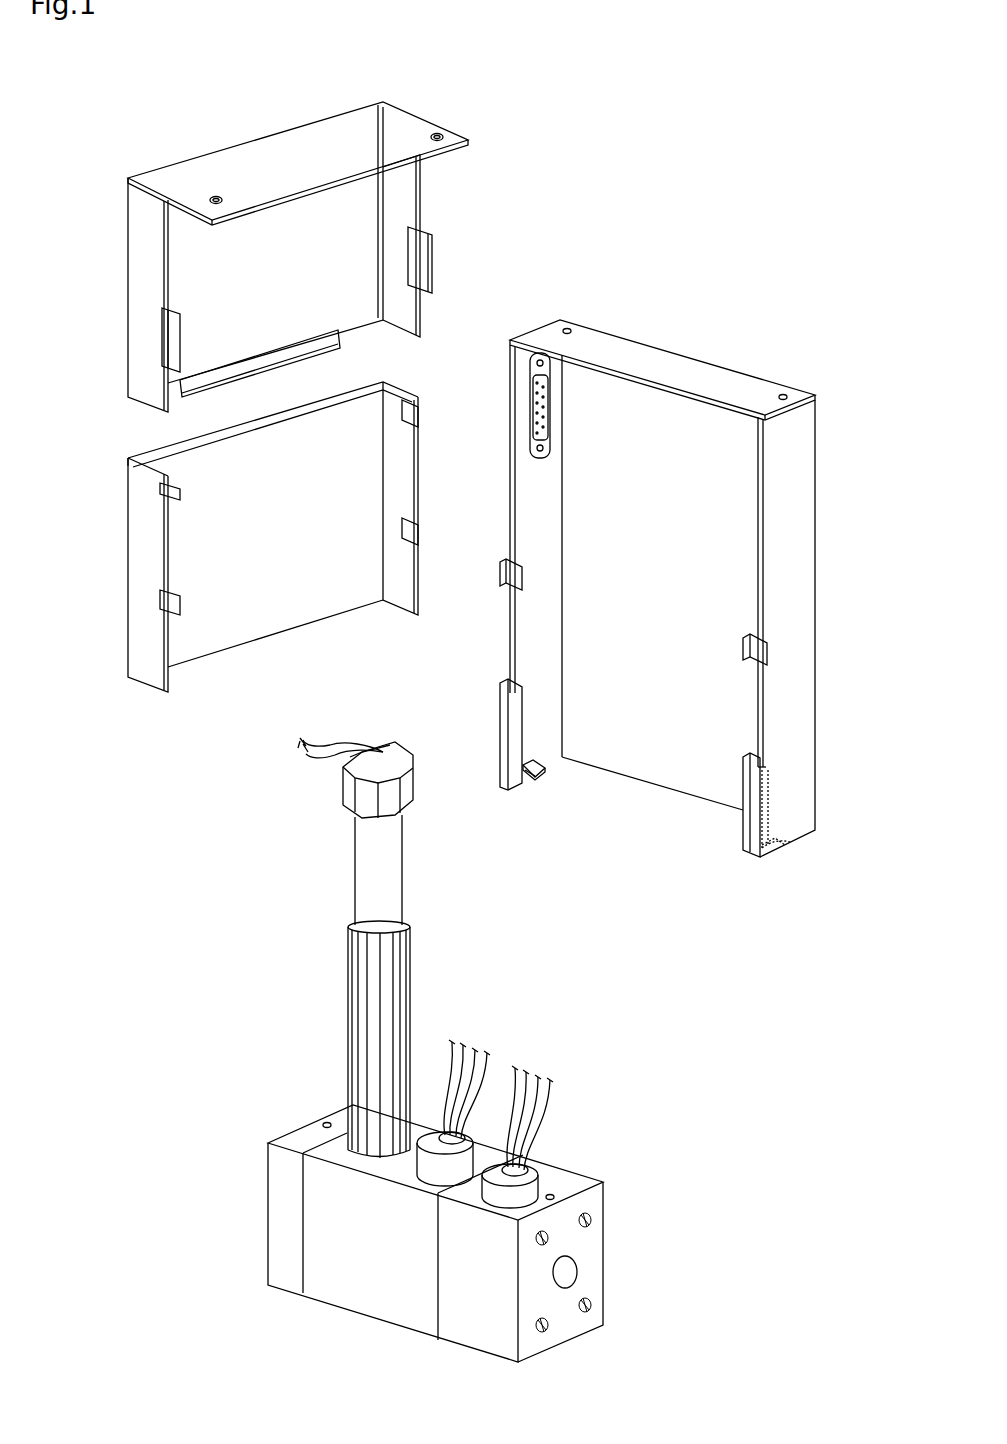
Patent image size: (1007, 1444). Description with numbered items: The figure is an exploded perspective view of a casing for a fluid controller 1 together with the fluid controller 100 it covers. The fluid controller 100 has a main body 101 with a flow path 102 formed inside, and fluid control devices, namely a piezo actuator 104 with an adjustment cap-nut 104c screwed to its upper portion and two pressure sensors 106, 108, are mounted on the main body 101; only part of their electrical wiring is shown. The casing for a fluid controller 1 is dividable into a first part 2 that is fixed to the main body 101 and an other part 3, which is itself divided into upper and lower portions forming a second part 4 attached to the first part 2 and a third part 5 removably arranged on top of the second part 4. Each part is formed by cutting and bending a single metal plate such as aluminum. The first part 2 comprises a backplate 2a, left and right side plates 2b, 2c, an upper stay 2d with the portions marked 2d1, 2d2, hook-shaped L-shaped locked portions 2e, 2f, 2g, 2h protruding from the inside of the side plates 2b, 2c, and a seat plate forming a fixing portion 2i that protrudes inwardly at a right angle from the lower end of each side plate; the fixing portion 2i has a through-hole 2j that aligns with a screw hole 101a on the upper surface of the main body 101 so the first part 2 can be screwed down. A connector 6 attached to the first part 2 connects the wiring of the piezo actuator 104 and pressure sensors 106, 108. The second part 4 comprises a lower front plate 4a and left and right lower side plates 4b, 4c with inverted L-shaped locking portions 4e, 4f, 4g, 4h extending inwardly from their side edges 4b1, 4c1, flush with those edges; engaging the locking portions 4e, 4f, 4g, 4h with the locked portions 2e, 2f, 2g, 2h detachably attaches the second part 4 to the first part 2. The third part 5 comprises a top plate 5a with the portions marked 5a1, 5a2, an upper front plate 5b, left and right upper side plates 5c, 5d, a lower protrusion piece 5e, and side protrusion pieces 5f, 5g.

The casing for a fluid controller 1 is at (703, 130).
The first part 2 is at (675, 328).
The other part 3 is at (653, 97).
The second part 4 is at (436, 413).
The third part 5 is at (458, 185).
The connector 6 is at (530, 418).
The fluid controller 100 is at (222, 1012).
The main body 101 is at (315, 1298).
The screw hole 101a is at (325, 1125).
The flow path 102 is at (580, 1270).
The piezo actuator 104 is at (352, 890).
The adjustment cap-nut 104c is at (348, 790).
The pressure sensor 106 is at (430, 1140).
The pressure sensor 108 is at (533, 1182).
The backplate 2a is at (655, 750).
The left side plate 2b is at (793, 833).
The right side plate 2c is at (545, 745).
The upper stay 2d is at (700, 370).
The screw hole 2d1 is at (785, 390).
The screw hole 2d2 is at (572, 330).
The locked portion 2e is at (500, 575).
The locked portion 2f is at (745, 645).
The locked portion 2g is at (498, 700).
The locked portion 2h is at (743, 770).
The fixing portion 2i is at (533, 775).
The through-hole 2j is at (533, 758).
The lower front plate 4a is at (290, 615).
The left lower side plate 4b is at (148, 665).
The side edge 4b1 is at (172, 685).
The right lower side plate 4c is at (397, 600).
The side edge 4c1 is at (420, 575).
The locking portion 4e is at (395, 418).
The locking portion 4f is at (180, 490).
The locking portion 4g is at (400, 535).
The locking portion 4h is at (180, 605).
The top plate 5a is at (285, 160).
The screw hole 5a1 is at (212, 197).
The screw hole 5a2 is at (442, 135).
The upper front plate 5b is at (355, 308).
The left upper side plate 5c is at (155, 240).
The right upper side plate 5d is at (428, 200).
The lower protrusion piece 5e is at (232, 372).
The side protrusion piece 5f is at (180, 332).
The side protrusion piece 5g is at (422, 258).